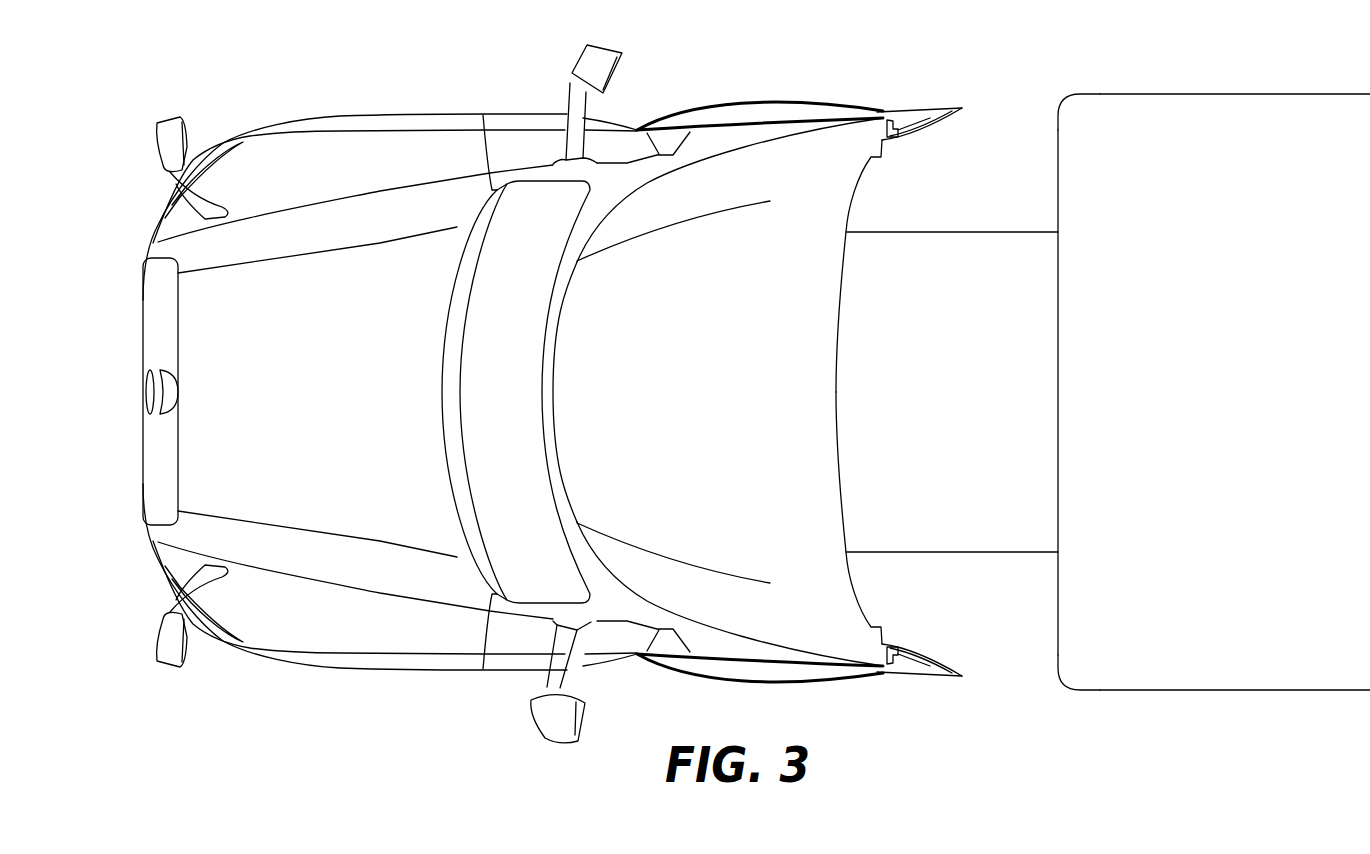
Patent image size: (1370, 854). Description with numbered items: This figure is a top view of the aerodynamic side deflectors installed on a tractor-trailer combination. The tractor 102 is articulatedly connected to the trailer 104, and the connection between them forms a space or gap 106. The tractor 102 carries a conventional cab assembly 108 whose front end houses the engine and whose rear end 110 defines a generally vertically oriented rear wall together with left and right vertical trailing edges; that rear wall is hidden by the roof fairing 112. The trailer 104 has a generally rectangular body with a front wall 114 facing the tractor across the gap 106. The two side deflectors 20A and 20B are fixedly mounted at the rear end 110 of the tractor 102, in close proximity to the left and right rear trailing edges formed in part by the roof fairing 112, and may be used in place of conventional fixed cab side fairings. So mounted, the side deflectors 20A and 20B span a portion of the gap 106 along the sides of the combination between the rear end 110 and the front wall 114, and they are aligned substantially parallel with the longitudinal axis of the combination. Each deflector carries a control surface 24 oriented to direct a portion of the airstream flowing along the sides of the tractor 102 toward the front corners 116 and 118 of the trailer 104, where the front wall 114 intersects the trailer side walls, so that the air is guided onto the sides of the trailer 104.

The tractor 102 is at (370, 130).
The trailer 104 is at (1222, 118).
The gap 106 is at (1007, 140).
The cab assembly 108 is at (537, 176).
The rear end 110 is at (815, 110).
The roof fairing 112 is at (753, 196).
The front wall 114 is at (1058, 372).
The front corner 116 is at (1065, 690).
The front corner 118 is at (1065, 98).
The side deflector 20A is at (952, 692).
The side deflector 20B is at (952, 92).
The control surface 24 is at (917, 112).